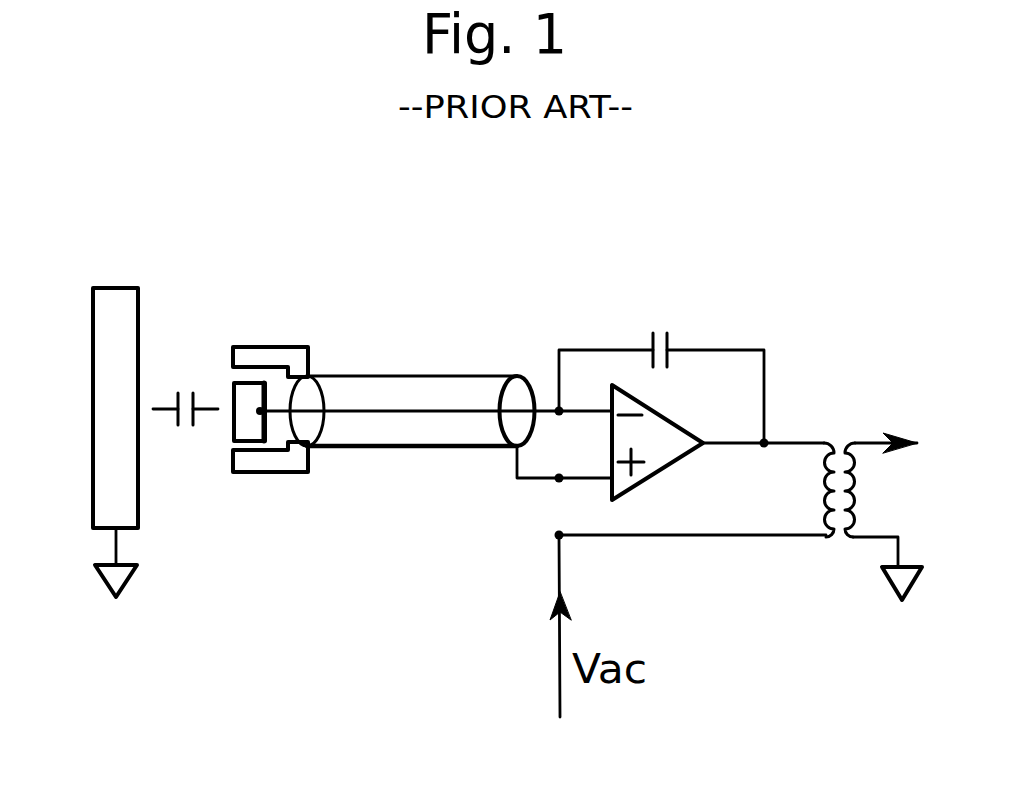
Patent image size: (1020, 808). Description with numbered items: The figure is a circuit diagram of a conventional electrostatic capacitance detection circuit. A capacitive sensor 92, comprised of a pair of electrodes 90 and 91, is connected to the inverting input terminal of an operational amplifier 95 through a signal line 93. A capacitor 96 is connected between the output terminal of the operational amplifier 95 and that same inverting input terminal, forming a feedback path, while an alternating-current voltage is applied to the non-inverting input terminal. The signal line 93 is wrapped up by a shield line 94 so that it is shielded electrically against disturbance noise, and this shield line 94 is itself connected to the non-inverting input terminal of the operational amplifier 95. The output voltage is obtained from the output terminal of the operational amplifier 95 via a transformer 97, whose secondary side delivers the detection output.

The electrode 90 is at (113, 288).
The electrode 91 is at (233, 441).
The capacitive sensor 92 is at (183, 347).
The signal line 93 is at (373, 412).
The shield line 94 is at (438, 450).
The operational amplifier 95 is at (628, 392).
The capacitor 96 is at (660, 323).
The transformer 97 is at (840, 437).